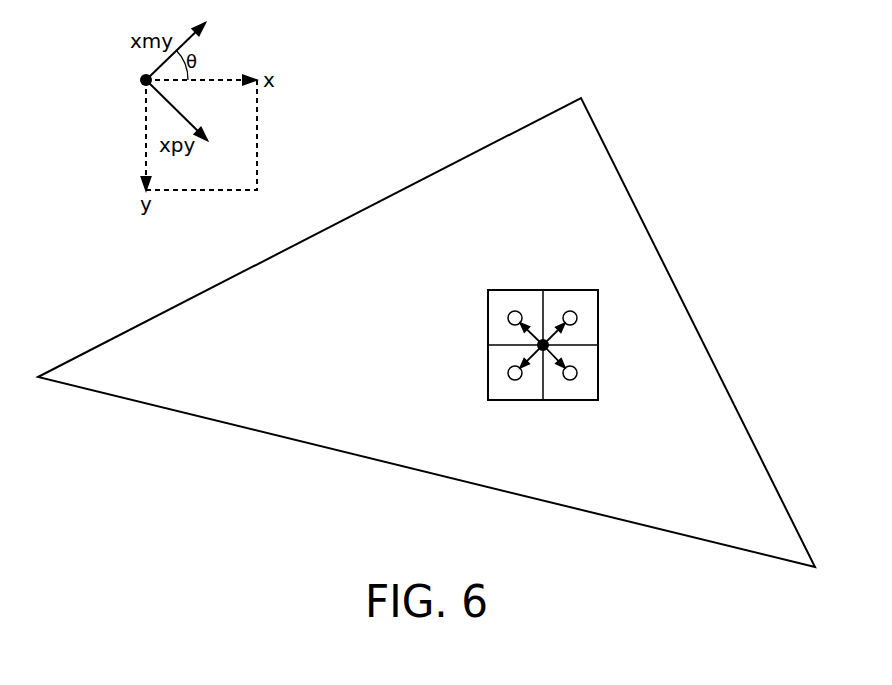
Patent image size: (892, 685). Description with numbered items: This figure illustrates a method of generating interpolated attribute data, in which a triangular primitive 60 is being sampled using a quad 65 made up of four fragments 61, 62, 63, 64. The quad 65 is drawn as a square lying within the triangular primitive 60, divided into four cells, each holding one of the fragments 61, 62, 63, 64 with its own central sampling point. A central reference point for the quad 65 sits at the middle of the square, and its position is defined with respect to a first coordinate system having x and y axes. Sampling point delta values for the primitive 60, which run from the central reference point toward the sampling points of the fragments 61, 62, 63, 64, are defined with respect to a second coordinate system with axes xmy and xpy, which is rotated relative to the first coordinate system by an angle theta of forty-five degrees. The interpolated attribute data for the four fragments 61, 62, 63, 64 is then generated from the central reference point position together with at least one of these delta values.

The triangular primitive 60 is at (615, 158).
The quad 65 is at (506, 272).
The fragment 61 is at (488, 316).
The fragment 62 is at (598, 316).
The fragment 63 is at (488, 371).
The fragment 64 is at (598, 371).